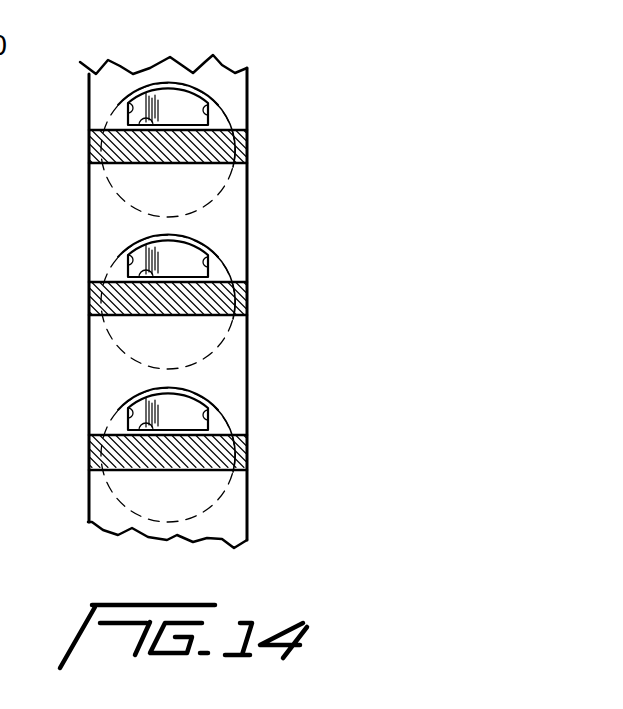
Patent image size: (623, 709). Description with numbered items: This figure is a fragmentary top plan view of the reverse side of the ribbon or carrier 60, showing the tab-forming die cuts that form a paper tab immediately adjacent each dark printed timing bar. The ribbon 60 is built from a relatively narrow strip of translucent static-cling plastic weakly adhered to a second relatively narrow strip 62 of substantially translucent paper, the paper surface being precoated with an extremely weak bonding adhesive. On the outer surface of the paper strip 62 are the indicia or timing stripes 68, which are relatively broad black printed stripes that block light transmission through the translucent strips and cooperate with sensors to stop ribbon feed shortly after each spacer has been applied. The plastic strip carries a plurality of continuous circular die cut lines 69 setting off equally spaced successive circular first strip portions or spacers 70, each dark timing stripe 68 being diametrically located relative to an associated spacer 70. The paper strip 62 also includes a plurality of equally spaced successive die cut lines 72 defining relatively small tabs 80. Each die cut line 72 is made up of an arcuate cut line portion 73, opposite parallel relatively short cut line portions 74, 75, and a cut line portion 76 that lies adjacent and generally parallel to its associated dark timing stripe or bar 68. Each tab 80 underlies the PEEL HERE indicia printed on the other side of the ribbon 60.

The ribbon or carrier 60 is at (325, 41).
The second relatively narrow strip 62 is at (239, 186).
The timing stripe 68 is at (221, 139).
The continuous circular die cut line 69 is at (89, 199).
The spacer 70 is at (212, 173).
The die cut line 72 is at (167, 89).
The arcuate cut line portion 73 is at (143, 95).
The short cut line portion 74 is at (126, 102).
The short cut line portion 75 is at (226, 75).
The cut line portion 76 is at (90, 150).
The tab 80 is at (138, 100).